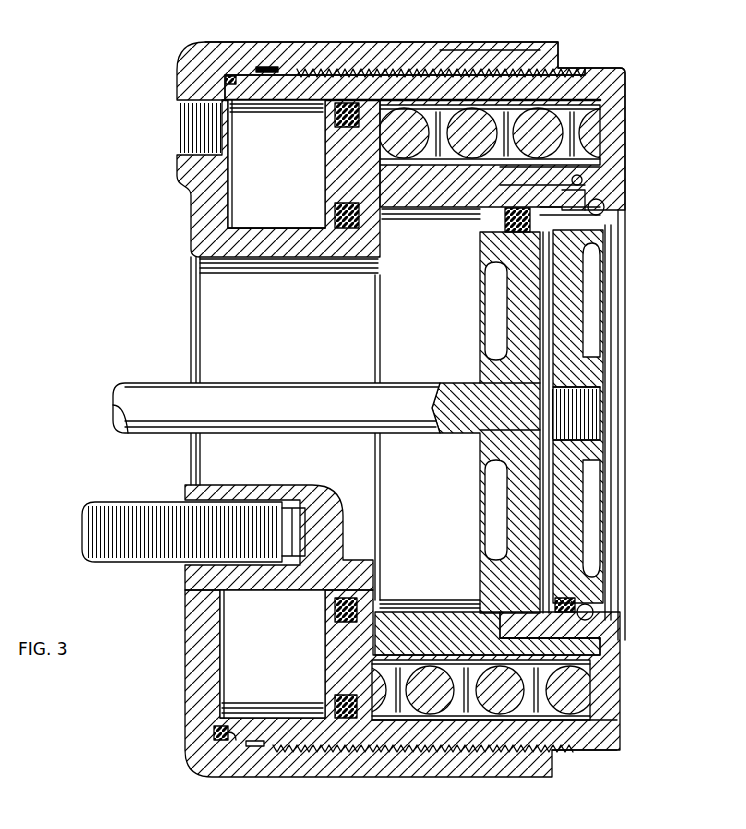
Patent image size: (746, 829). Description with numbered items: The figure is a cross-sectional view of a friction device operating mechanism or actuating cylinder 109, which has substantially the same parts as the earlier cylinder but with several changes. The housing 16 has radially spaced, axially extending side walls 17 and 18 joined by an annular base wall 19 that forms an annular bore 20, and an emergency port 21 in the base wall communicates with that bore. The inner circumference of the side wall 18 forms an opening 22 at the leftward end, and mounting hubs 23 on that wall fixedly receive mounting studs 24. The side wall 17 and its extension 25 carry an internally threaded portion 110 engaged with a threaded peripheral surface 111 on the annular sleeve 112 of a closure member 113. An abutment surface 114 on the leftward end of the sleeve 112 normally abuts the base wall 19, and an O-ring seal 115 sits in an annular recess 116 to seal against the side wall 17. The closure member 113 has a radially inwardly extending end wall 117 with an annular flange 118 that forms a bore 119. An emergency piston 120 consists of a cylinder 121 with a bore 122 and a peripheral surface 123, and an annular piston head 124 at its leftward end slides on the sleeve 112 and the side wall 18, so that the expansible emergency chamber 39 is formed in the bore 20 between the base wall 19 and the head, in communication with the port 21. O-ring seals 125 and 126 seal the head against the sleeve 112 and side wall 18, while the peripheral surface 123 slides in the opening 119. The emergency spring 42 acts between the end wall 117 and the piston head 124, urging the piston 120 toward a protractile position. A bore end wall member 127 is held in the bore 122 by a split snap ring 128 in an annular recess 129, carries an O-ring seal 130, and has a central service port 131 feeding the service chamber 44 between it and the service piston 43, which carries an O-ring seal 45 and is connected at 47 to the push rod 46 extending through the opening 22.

The actuating cylinder 109 is at (199, 40).
The housing 16 is at (240, 45).
The side wall 17 is at (313, 50).
The extension 25 is at (474, 52).
The end wall 117 is at (612, 125).
The flange 118 is at (597, 152).
The bore 119 is at (596, 180).
The emergency piston 120 is at (612, 196).
The peripheral surface 123 is at (575, 187).
The emergency port 21 is at (188, 150).
The emergency chamber 39 is at (288, 164).
The base wall 19 is at (198, 213).
The annular bore 20 is at (253, 228).
The opening 22 is at (228, 265).
The side wall 18 is at (272, 262).
The O-ring seal 45 is at (492, 224).
The service piston 43 is at (492, 320).
The connection 47 is at (492, 446).
The push rod 46 is at (295, 413).
The O-ring seal 126 is at (612, 262).
The bore end wall member 127 is at (570, 323).
The service port 131 is at (592, 430).
The service chamber 44 is at (548, 462).
The mounting stud 24 is at (126, 502).
The mounting hub 23 is at (244, 487).
The bore 122 is at (416, 606).
The O-ring seal 130 is at (578, 598).
The split snap ring 128 is at (596, 604).
The annular recess 129 is at (614, 628).
The cylinder 121 is at (440, 635).
The piston head 124 is at (328, 650).
The O-ring seal 125 is at (330, 700).
The emergency spring 42 is at (508, 693).
The abutment surface 114 is at (214, 726).
The O-ring seal 115 is at (222, 738).
The annular recess 116 is at (242, 748).
The sleeve 112 is at (412, 731).
The closure member 113 is at (600, 735).
The internally threaded portion 110 is at (492, 748).
The threaded peripheral surface 111 is at (572, 752).